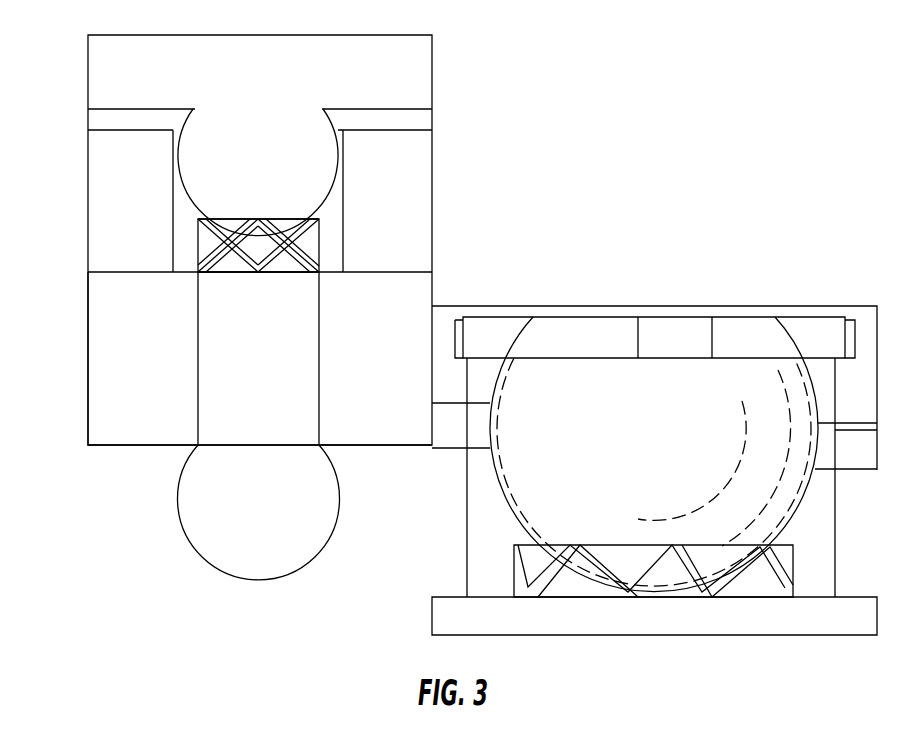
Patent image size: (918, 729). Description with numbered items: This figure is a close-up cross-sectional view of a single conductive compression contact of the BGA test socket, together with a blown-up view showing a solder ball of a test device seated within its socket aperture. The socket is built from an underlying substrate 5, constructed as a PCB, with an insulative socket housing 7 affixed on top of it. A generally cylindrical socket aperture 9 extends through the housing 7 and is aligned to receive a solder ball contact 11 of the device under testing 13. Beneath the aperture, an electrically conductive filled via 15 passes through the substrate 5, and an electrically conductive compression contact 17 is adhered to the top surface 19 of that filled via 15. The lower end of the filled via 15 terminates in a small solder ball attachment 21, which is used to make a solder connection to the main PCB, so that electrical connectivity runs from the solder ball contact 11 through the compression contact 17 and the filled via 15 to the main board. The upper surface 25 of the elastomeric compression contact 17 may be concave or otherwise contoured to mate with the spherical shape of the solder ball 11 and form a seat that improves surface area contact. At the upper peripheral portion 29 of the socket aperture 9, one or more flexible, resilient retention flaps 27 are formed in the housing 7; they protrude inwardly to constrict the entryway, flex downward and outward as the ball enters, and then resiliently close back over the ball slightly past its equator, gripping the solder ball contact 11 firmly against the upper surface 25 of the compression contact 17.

The substrate 5 is at (115, 352).
The socket housing 7 is at (108, 200).
The socket aperture 9 is at (315, 223).
The solder ball contact 11 is at (320, 174).
The device under testing 13 is at (407, 75).
The filled via 15 is at (220, 405).
The compression contact 17 is at (205, 245).
The top surface 19 is at (287, 283).
The solder ball attachment 21 is at (232, 524).
The upper surface 25 is at (227, 223).
The retention flap 27 is at (735, 332).
The upper peripheral portion 29 is at (668, 403).